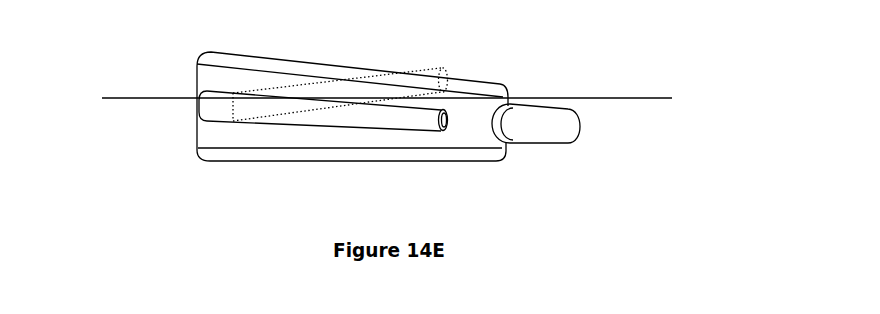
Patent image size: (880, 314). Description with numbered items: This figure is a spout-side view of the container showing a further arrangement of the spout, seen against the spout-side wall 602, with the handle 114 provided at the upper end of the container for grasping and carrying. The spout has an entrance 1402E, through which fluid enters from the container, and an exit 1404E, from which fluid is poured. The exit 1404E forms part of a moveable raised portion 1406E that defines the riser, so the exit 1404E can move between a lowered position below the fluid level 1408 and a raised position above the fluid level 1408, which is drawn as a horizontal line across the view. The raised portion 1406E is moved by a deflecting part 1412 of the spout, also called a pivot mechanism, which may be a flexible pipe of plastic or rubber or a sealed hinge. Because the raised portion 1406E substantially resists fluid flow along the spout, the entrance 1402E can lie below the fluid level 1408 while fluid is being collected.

The raised portion 1406E is at (442, 58).
The fluid level 1408 is at (115, 106).
The entrance 1402E is at (213, 100).
The deflecting part 1412 is at (226, 127).
The exit 1404E is at (447, 125).
The spout-side wall 602 is at (313, 147).
The handle 114 is at (551, 133).